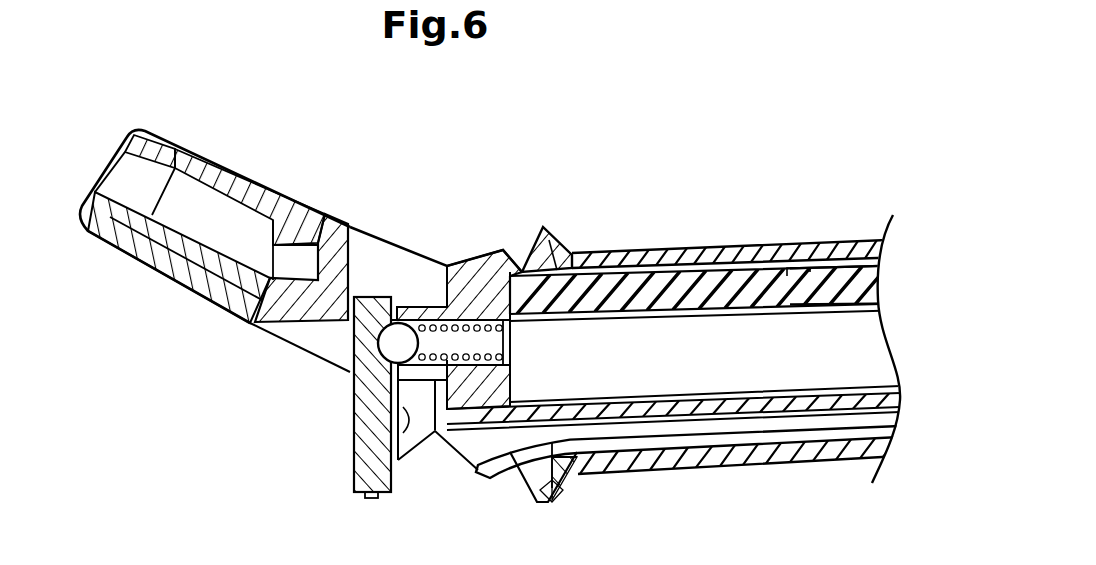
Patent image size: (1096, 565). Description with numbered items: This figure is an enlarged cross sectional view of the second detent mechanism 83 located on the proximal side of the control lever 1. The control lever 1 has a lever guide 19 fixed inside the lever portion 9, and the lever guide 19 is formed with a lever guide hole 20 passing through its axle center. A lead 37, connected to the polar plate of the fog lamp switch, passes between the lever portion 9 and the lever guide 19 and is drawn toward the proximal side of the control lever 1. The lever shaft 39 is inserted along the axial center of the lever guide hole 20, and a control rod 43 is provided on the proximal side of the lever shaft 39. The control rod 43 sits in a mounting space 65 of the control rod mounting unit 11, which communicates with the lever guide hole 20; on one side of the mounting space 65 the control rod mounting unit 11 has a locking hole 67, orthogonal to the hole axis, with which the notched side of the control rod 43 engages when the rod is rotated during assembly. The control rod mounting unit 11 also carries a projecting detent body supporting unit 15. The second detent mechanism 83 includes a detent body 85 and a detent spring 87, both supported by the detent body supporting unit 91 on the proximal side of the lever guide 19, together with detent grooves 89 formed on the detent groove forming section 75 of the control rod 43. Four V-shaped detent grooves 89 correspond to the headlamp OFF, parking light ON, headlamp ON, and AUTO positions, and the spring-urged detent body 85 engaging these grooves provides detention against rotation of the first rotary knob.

The control lever 1 is at (674, 240).
The lever portion 9 is at (858, 243).
The control rod mounting unit 11 is at (397, 287).
The detent body supporting unit 15 is at (267, 210).
The lever guide 19 is at (608, 252).
The lever guide hole 20 is at (705, 320).
The lead 37 is at (811, 428).
The lever shaft 39 is at (790, 335).
The control rod 43 is at (355, 447).
The mounting space 65 is at (330, 342).
The locking hole 67 is at (353, 268).
The detent groove forming section 75 is at (356, 462).
The second detent mechanism 83 is at (388, 323).
The detent body 85 is at (431, 305).
The detent spring 87 is at (508, 252).
The detent groove 89 is at (404, 430).
The detent body supporting unit 91 is at (447, 320).